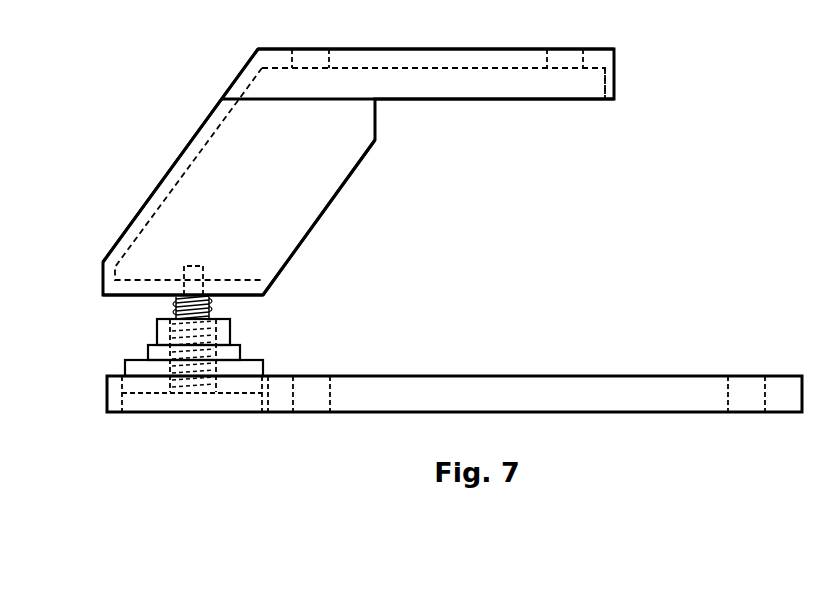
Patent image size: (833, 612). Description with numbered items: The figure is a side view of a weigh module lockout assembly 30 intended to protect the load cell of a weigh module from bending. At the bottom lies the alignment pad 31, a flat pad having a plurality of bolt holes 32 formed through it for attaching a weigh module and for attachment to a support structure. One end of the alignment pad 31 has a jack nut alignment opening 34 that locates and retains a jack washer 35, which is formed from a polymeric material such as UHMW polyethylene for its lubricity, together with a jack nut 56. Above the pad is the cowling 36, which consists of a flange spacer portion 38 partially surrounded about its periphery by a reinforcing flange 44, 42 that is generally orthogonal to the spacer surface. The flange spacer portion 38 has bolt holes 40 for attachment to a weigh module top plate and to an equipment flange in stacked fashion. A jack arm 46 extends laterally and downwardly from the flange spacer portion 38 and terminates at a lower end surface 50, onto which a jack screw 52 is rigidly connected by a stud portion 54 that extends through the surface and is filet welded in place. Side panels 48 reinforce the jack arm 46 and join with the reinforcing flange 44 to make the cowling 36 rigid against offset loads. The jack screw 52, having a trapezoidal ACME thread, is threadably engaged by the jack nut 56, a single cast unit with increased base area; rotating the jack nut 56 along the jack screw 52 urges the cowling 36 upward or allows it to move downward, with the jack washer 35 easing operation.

The weigh module lockout assembly 30 is at (681, 236).
The alignment pad 31 is at (585, 376).
The bolt holes 32 is at (294, 400).
The jack nut alignment opening 34 is at (266, 388).
The jack washer 35 is at (123, 403).
The cowling 36 is at (331, 158).
The flange spacer portion 38 is at (446, 49).
The bolt holes 40 is at (294, 59).
The reinforcing flange 42 is at (605, 90).
The reinforcing flange 44 is at (497, 100).
The jack arm 46 is at (172, 167).
The side panels 48 is at (313, 228).
The lower end surface 50 is at (117, 304).
The jack screw 52 is at (213, 303).
The stud portion 54 is at (204, 272).
The jack nut 56 is at (157, 343).